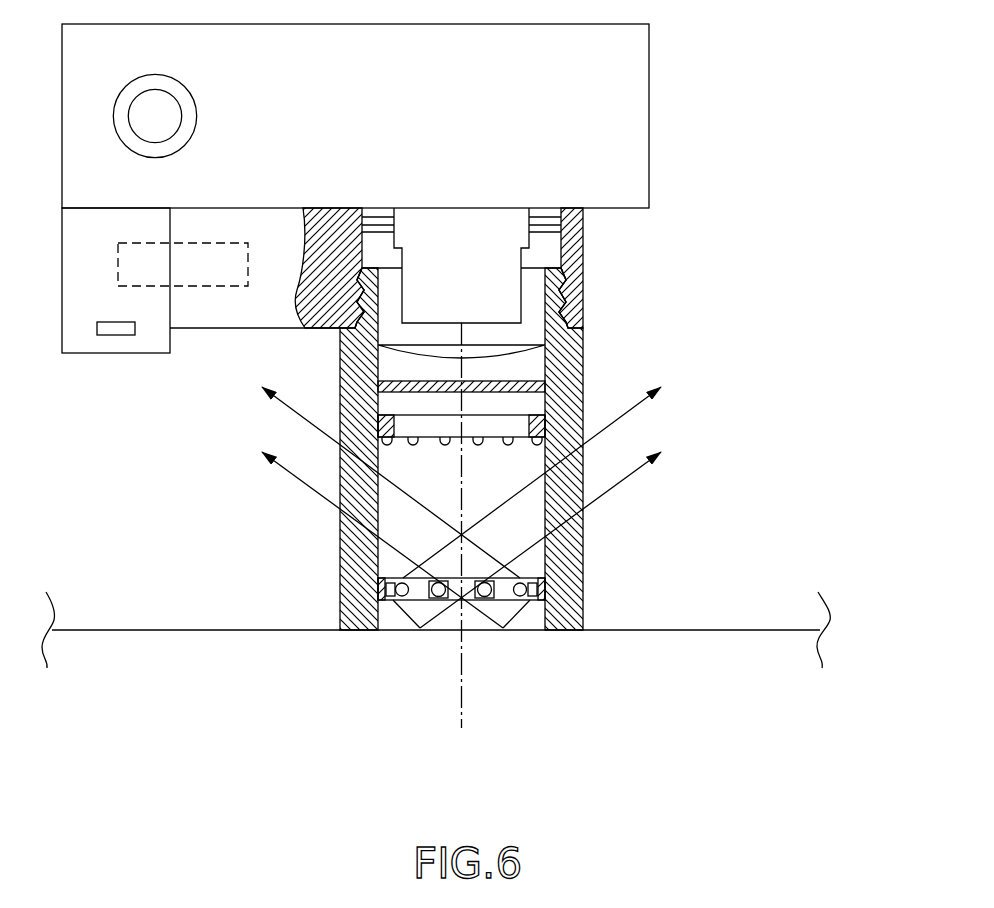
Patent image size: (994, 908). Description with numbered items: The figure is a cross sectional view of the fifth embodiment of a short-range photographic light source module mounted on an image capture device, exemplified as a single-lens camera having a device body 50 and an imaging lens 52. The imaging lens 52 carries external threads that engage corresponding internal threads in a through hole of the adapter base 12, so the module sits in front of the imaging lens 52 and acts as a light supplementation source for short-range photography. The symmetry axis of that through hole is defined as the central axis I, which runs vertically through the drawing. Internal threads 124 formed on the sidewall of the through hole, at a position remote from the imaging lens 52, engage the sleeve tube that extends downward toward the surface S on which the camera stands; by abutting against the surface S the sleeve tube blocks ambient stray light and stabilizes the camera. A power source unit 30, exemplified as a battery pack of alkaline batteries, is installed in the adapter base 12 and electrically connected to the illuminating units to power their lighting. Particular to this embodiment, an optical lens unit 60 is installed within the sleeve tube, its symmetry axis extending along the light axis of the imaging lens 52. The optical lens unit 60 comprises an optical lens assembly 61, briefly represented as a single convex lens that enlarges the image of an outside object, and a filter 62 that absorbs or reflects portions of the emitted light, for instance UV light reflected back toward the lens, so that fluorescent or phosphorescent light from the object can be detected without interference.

The adapter base 12 is at (585, 227).
The power source unit 30 is at (205, 270).
The device body 50 is at (618, 126).
The imaging lens 52 is at (498, 275).
The optical lens unit 60 is at (555, 355).
The optical lens assembly 61 is at (523, 352).
The filter 62 is at (540, 382).
The internal threads 124 is at (567, 285).
The surface S is at (733, 630).
The central axis I is at (461, 543).